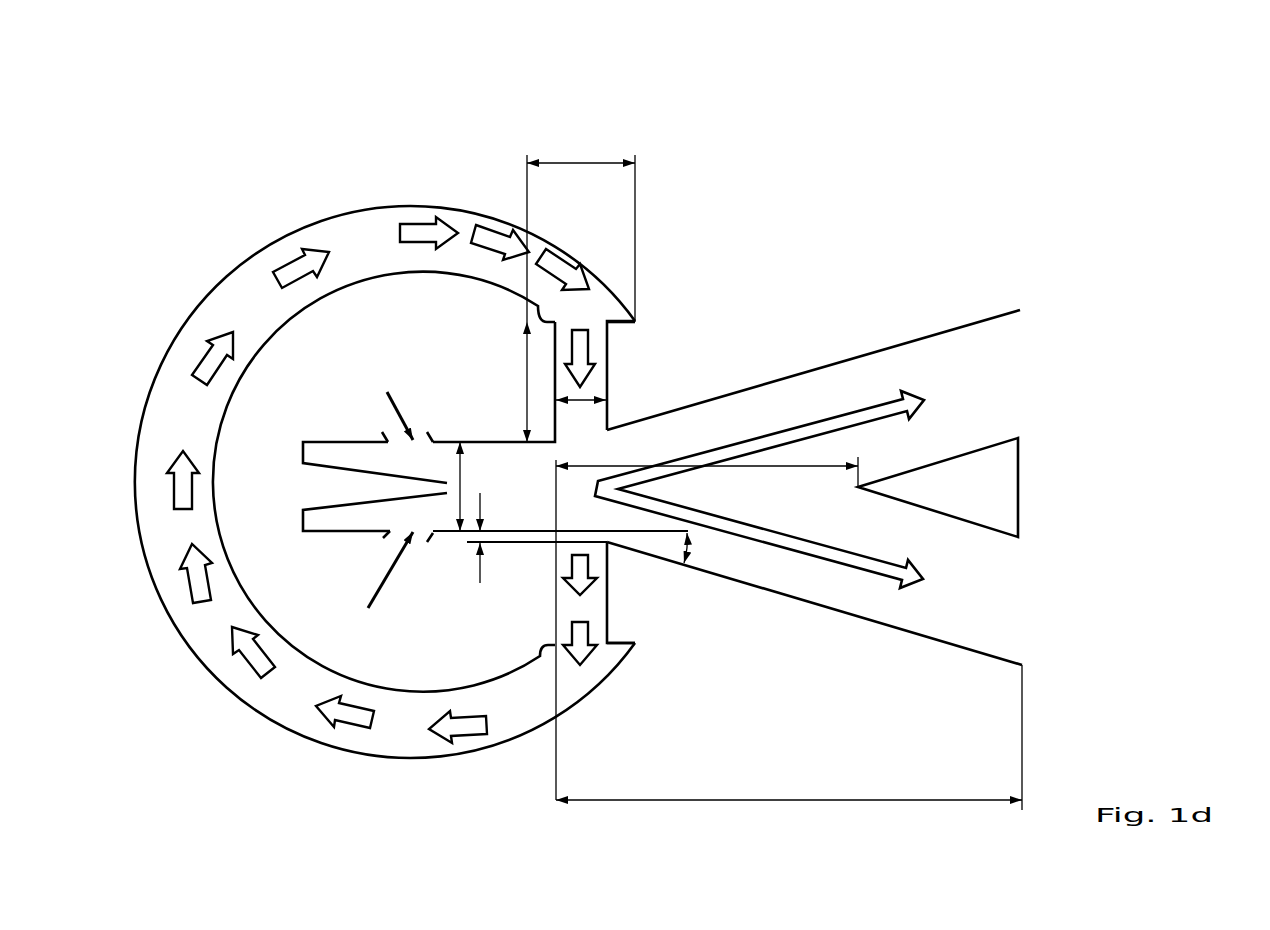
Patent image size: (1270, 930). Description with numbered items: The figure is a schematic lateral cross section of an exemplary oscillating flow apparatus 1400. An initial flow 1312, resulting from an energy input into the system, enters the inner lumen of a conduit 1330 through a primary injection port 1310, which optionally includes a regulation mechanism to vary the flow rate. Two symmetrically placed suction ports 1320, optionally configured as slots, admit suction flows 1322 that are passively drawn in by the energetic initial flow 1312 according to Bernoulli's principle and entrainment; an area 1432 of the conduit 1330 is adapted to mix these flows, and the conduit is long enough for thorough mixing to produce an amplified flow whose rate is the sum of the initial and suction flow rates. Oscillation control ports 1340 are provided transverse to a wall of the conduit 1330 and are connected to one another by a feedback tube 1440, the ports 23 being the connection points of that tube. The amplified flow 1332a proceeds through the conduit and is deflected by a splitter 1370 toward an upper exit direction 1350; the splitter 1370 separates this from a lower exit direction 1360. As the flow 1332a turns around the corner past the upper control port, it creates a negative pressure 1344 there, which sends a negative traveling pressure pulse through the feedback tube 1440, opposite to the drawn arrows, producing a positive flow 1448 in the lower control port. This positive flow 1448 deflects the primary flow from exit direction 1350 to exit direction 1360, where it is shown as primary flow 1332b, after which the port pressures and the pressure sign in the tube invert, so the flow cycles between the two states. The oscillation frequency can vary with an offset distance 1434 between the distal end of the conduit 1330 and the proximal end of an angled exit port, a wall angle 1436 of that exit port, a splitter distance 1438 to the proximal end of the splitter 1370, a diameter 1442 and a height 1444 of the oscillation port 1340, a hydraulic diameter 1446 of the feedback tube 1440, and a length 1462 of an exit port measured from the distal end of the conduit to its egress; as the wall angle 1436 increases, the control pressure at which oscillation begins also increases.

The oscillating flow apparatus 1400 is at (300, 188).
The feedback tube 1440 is at (282, 687).
The oscillation control ports 1340 is at (593, 383).
The negative pressure 1344 is at (587, 347).
The positive flow 1448 is at (583, 570).
The ports 23 is at (583, 314).
The hydraulic diameter 1446 is at (568, 152).
The height 1444 is at (520, 353).
The diameter 1442 is at (578, 410).
The area 1432 is at (465, 475).
The offset distance 1434 is at (465, 537).
The splitter distance 1438 is at (598, 460).
The length 1462 is at (762, 805).
The wall angle 1436 is at (690, 548).
The primary injection port 1310 is at (352, 512).
The initial flow 1312 is at (340, 494).
The suction flows 1322 is at (420, 457).
The suction ports 1320 is at (374, 500).
The conduit 1330 is at (487, 458).
The amplified flow 1332a is at (892, 407).
The primary flow 1332b is at (910, 576).
The exit direction 1350 is at (1003, 347).
The exit direction 1360 is at (1005, 630).
The splitter 1370 is at (992, 485).